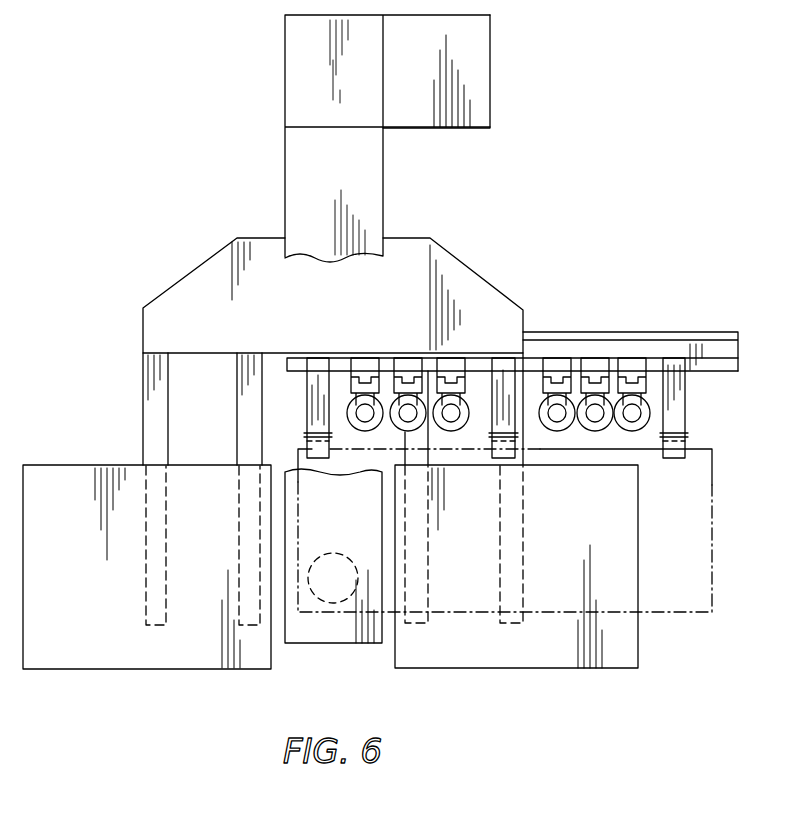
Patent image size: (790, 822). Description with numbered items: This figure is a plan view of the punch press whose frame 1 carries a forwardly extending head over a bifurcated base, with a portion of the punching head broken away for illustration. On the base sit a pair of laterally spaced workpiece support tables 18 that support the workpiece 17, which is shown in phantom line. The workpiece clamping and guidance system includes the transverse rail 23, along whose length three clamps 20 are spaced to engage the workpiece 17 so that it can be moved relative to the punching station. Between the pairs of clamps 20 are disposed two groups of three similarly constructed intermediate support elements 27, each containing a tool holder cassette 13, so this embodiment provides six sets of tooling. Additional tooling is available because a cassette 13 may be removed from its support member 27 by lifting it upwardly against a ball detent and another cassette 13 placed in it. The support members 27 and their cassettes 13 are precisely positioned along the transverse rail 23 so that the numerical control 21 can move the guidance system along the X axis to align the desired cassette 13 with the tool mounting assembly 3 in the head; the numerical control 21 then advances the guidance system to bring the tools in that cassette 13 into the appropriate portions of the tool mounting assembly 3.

The frame 1 is at (383, 183).
The numerical control 21 is at (490, 84).
The transverse rail 23 is at (716, 345).
The clamps 20 is at (318, 388).
The intermediate support elements 27 is at (635, 362).
The tool holder cassette 13 is at (630, 427).
The workpiece 17 is at (712, 548).
The tool mounting assembly 3 is at (350, 556).
The workpiece support tables 18 is at (206, 652).